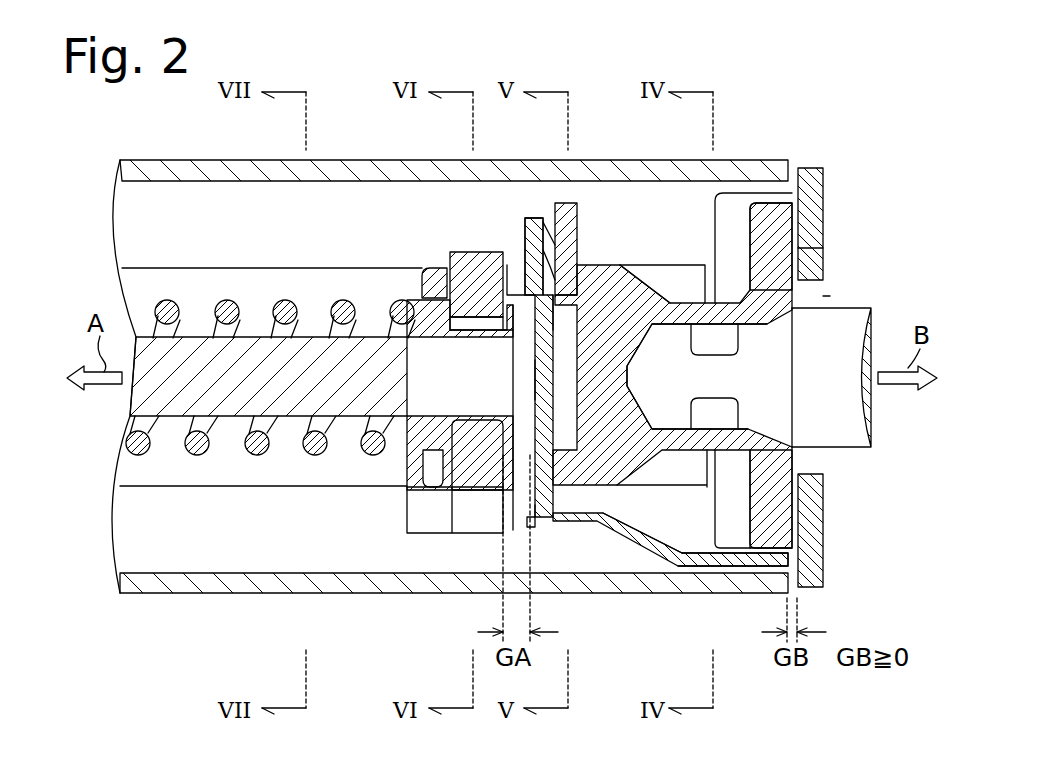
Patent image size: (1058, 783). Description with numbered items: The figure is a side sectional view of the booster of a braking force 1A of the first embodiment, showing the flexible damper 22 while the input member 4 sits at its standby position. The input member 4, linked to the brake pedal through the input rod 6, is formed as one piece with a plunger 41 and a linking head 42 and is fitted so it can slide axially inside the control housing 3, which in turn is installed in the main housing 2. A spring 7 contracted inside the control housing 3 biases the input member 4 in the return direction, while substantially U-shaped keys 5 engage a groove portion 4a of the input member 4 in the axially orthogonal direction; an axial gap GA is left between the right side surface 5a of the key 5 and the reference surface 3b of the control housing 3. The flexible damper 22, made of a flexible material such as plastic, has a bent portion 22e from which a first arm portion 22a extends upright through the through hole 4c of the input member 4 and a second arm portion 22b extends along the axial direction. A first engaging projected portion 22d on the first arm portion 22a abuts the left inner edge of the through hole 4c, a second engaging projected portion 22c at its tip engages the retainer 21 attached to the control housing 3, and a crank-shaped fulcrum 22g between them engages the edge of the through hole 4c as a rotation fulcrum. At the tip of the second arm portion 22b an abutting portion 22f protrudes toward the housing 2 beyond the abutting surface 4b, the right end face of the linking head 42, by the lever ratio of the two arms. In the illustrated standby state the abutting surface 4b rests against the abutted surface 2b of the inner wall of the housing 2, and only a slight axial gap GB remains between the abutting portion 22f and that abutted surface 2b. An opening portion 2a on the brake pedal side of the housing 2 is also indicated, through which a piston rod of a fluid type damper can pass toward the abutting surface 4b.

The booster of a braking force 1A is at (850, 41).
The main housing 2 is at (825, 184).
The opening portion 2a is at (832, 296).
The abutted surface 2b is at (805, 251).
The control housing 3 is at (762, 160).
The reference surface 3b is at (533, 507).
The input member 4 is at (688, 300).
The groove portion 4a is at (442, 320).
The abutting surface 4b is at (805, 236).
The through hole 4c is at (600, 378).
The key 5 is at (478, 262).
The right side surface 5a is at (510, 470).
The input rod 6 is at (860, 433).
The spring 7 is at (255, 456).
The retainer 21 is at (566, 210).
The flexible damper 22 is at (640, 550).
The first arm portion 22a is at (560, 330).
The second arm portion 22b is at (660, 558).
The second engaging projected portion 22c is at (540, 240).
The first engaging projected portion 22d is at (522, 380).
The bent portion 22e is at (545, 522).
The abutting portion 22f is at (800, 560).
The fulcrum 22g is at (560, 270).
The plunger 41 is at (322, 305).
The linking head 42 is at (664, 298).